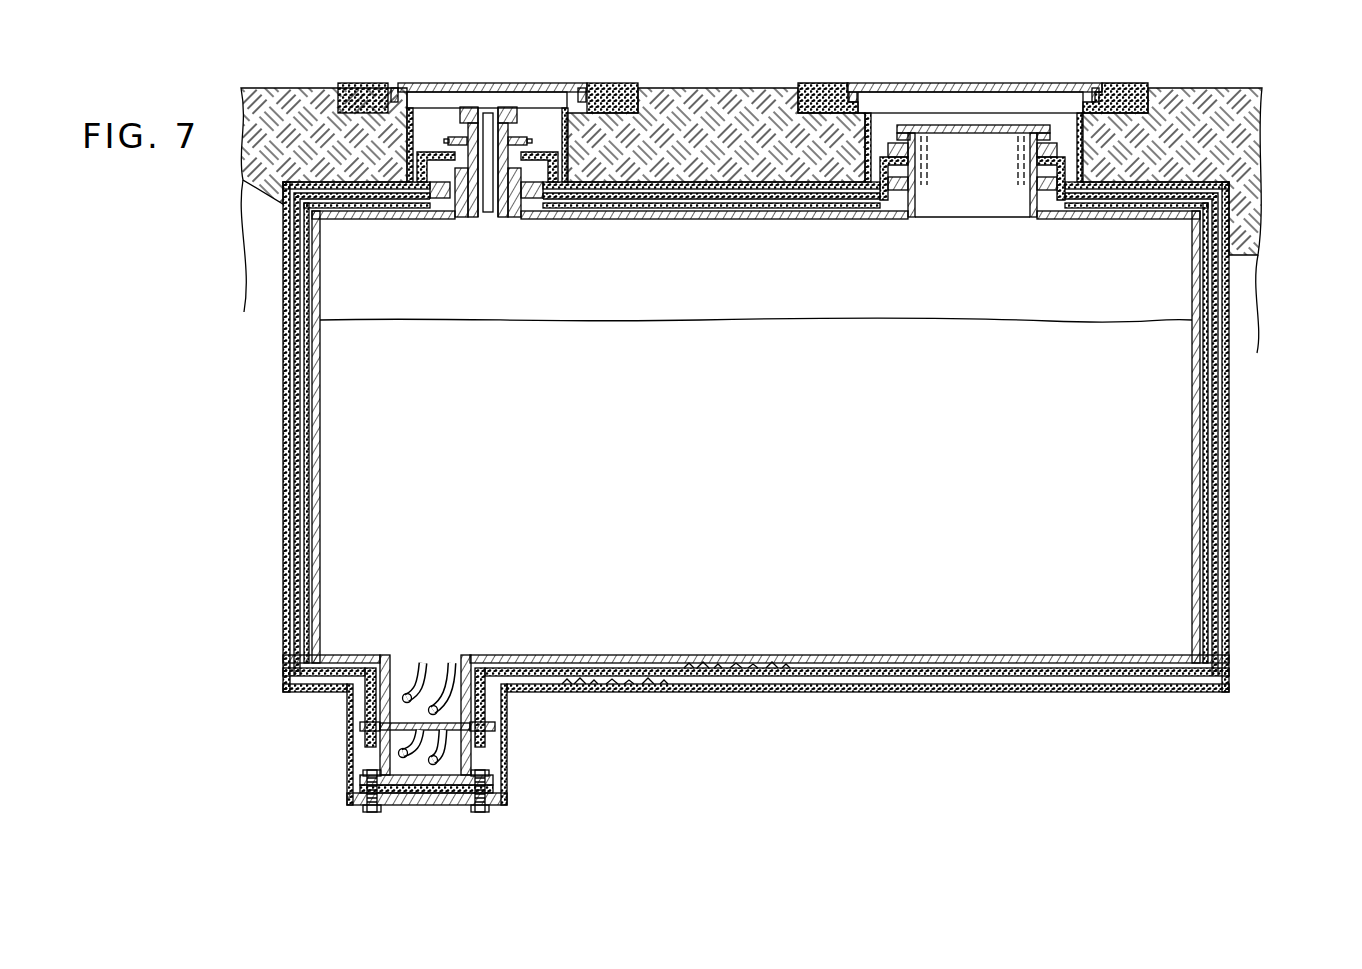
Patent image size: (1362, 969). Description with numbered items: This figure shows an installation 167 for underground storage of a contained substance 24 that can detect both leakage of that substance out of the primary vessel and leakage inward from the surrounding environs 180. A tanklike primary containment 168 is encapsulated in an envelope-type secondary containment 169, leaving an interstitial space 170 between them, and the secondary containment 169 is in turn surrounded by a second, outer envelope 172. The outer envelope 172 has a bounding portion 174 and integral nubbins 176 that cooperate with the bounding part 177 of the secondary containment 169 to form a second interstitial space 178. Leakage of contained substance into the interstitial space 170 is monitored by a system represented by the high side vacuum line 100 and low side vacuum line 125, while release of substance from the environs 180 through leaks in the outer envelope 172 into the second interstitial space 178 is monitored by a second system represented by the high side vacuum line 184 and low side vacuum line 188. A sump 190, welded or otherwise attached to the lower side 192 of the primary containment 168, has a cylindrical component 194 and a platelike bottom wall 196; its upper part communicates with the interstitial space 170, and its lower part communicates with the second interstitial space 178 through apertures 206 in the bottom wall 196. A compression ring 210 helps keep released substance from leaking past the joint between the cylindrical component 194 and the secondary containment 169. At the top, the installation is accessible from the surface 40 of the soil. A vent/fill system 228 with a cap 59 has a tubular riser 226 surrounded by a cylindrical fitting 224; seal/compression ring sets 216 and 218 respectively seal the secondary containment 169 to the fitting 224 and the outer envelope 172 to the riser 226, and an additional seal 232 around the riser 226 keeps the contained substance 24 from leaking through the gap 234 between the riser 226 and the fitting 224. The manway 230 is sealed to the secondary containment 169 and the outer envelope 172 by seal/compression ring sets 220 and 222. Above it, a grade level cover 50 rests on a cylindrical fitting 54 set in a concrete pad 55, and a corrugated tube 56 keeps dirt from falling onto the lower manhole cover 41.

The surface 40 is at (742, 84).
The cylindrical fitting 54 is at (840, 82).
The seal/compression ring set 222 is at (883, 132).
The grade level cover 50 is at (997, 83).
The lower manhole cover 41 is at (933, 126).
The manway 230 is at (1010, 100).
The concrete pad 55 is at (1093, 92).
The cap 59 is at (446, 122).
The vent/fill system 228 is at (481, 90).
The seal/compression ring set 218 is at (430, 106).
The tubular riser 226 is at (516, 122).
The seal/compression ring set 216 is at (430, 212).
The cylindrical fitting 224 is at (458, 196).
The seal 232 is at (468, 200).
The gap 234 is at (477, 200).
The contained substance 24 is at (593, 316).
The corrugated tube 56 is at (845, 165).
The seal/compression ring set 220 is at (883, 208).
The surrounding environs 180 is at (243, 290).
The interstitial space 170 is at (308, 336).
The primary containment 168 is at (295, 366).
The secondary containment 169 is at (278, 414).
The second interstitial space 178 is at (291, 444).
The outer envelope 172 is at (272, 508).
The high side vacuum line 100 is at (411, 657).
The low side vacuum line 125 is at (450, 657).
The cylindrical component 194 is at (462, 665).
The sump 190 is at (370, 684).
The high side vacuum line 184 is at (392, 735).
The installation 167 is at (295, 785).
The compression ring 210 is at (500, 725).
The low side vacuum line 188 is at (463, 753).
The bottom wall 196 is at (392, 778).
The apertures 206 is at (443, 780).
The nubbins 176 is at (618, 694).
The bounding portion 174 is at (747, 695).
The bounding part 177 is at (840, 678).
The lower side 192 is at (990, 664).